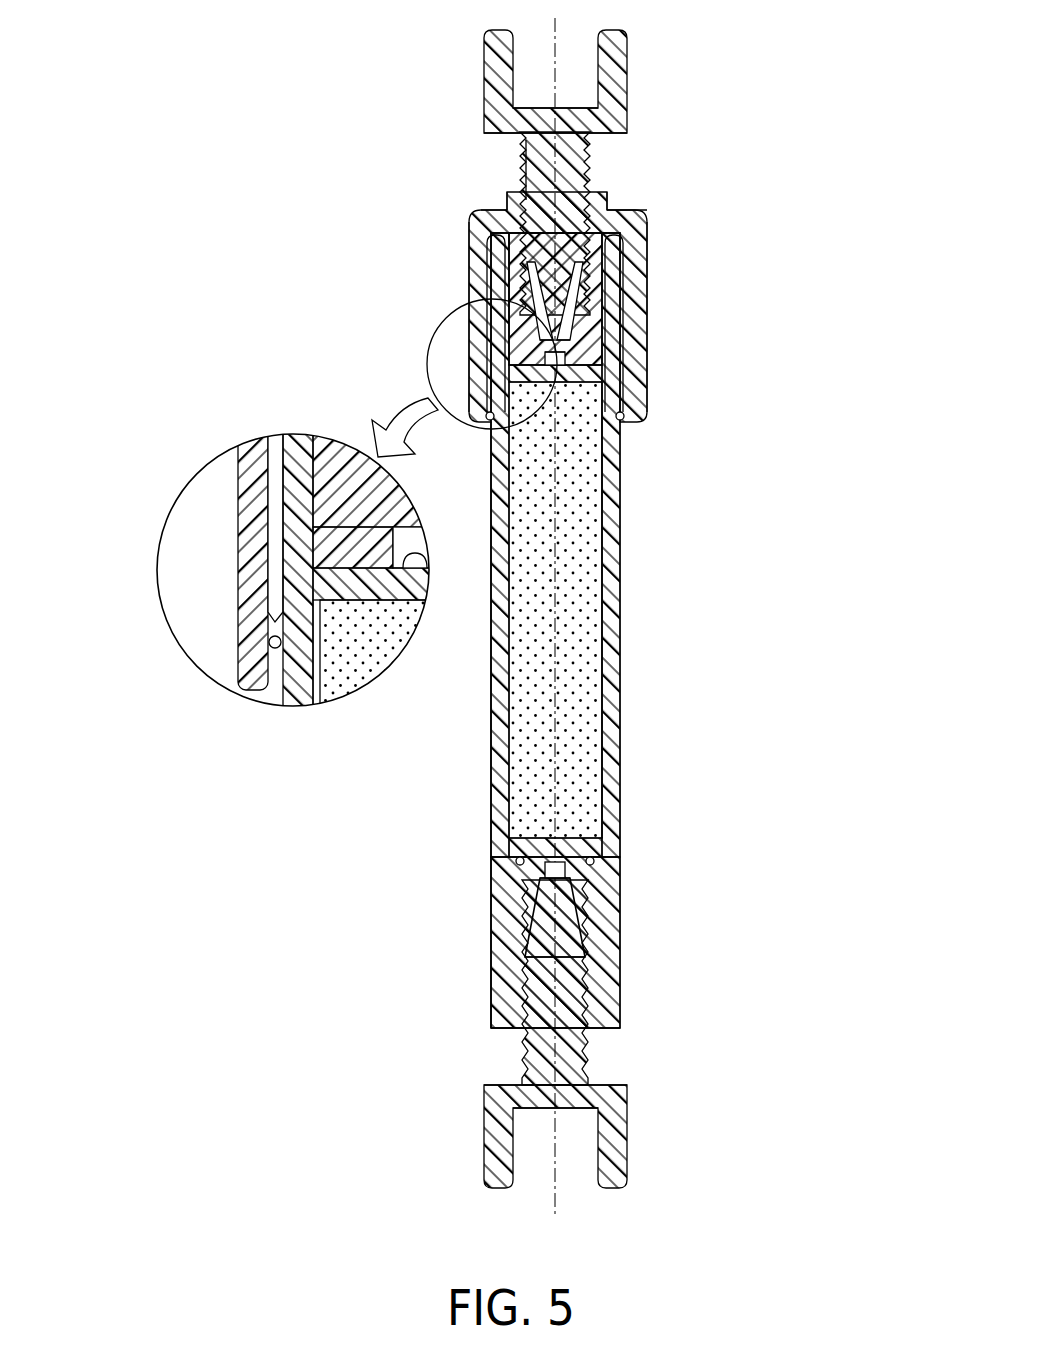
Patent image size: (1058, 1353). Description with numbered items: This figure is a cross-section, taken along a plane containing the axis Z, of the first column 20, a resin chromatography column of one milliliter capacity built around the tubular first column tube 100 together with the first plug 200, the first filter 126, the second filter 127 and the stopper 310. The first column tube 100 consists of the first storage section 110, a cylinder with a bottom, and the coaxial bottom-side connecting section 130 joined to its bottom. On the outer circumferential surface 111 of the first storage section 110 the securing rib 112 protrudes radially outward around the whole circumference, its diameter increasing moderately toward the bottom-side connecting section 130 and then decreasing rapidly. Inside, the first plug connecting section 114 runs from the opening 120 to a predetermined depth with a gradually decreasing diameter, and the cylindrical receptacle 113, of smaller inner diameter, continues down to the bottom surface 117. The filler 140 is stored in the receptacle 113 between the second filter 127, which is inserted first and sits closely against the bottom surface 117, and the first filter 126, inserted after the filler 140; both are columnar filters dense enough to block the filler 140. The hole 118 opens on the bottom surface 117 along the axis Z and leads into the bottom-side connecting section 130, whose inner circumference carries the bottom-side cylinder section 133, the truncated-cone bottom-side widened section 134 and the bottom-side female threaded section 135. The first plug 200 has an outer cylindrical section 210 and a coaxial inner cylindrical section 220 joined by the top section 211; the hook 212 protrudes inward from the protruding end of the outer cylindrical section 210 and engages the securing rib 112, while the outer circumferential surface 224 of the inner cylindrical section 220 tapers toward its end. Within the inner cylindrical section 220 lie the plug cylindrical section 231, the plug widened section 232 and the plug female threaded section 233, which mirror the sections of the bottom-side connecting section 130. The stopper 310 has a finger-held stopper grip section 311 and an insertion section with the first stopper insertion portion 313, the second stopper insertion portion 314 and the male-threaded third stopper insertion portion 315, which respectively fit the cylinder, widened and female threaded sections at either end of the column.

The first column 20 is at (775, 120).
The first column tube 100 is at (475, 485).
The first storage section 110 is at (645, 718).
The outer circumferential surface 111 is at (621, 555).
The securing rib 112 is at (642, 385).
The receptacle 113 is at (520, 665).
The first plug connecting section 114 is at (469, 213).
The bottom surface 117 is at (620, 848).
The hole 118 is at (620, 878).
The opening 120 is at (632, 212).
The first filter 126 is at (620, 445).
The second filter 127 is at (618, 812).
The bottom-side connecting section 130 is at (620, 970).
The bottom-side cylinder section 133 is at (540, 905).
The bottom-side widened section 134 is at (620, 920).
The bottom-side female threaded section 135 is at (520, 1005).
The filler 140 is at (602, 625).
The first plug 200 is at (660, 293).
The outer cylindrical section 210 is at (469, 236).
The top section 211 is at (499, 206).
The hook 212 is at (623, 422).
The inner cylindrical section 220 is at (490, 345).
The outer circumferential surface 224 is at (642, 240).
The plug cylindrical section 231 is at (545, 360).
The plug widened section 232 is at (527, 272).
The plug female threaded section 233 is at (530, 185).
The stopper 310 is at (640, 36).
The stopper grip section 311 is at (628, 100).
The first stopper insertion portion 313 is at (591, 160).
The second stopper insertion portion 314 is at (598, 300).
The third stopper insertion portion 315 is at (575, 365).